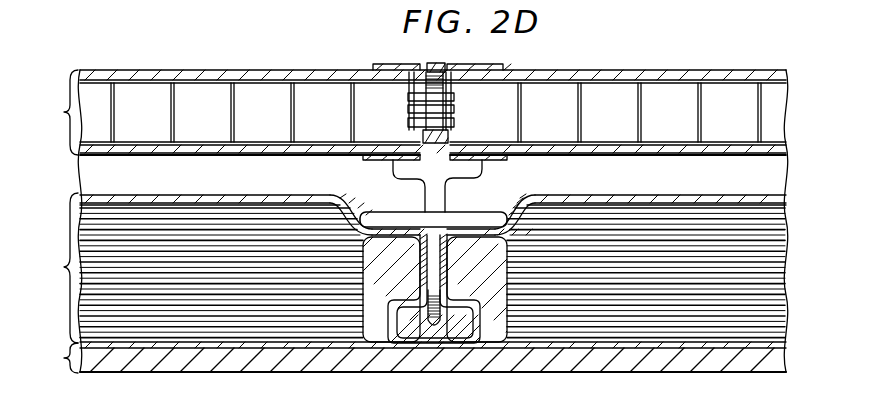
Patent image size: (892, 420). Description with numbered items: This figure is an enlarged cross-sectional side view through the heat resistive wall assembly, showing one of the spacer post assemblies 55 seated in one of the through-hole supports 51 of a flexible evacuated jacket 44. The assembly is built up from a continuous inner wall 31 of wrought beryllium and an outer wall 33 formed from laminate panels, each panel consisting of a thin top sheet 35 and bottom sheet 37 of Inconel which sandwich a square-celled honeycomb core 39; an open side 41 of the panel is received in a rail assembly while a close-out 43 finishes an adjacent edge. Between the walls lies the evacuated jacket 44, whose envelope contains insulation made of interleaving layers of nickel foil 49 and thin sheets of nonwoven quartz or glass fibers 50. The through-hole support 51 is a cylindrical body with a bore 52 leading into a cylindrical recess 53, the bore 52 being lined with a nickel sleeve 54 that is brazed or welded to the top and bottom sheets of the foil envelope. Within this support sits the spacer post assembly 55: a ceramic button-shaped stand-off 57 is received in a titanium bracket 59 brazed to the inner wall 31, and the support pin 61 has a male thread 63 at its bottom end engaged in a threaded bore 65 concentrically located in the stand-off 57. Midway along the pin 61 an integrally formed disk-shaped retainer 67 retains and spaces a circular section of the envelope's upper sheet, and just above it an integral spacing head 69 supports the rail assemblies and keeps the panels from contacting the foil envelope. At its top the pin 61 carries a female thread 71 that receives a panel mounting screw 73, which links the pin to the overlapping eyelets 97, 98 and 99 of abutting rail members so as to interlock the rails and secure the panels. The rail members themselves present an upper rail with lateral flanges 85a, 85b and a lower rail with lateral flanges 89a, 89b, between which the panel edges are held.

The inner wall 31 is at (410, 357).
The outer wall 33 is at (56, 112).
The top sheet 35 is at (632, 69).
The bottom sheet 37 is at (640, 155).
The core 39 is at (676, 124).
The open side 41 is at (452, 136).
The close-out 43 is at (412, 87).
The flexible evacuated jacket 44 is at (410, 268).
The nickel foil 49 is at (622, 250).
The sheets of nonwoven quartz or glass fibers 50 is at (722, 245).
The through-hole support 51 is at (369, 253).
The bore 52 is at (372, 320).
The cylindrical recess 53 is at (452, 262).
The nickel sleeve 54 is at (443, 267).
The spacer post assembly 55 is at (386, 185).
The button-shaped stand-off 57 is at (418, 333).
The titanium bracket 59 is at (430, 355).
The support pin 61 is at (433, 223).
The male thread 63 is at (422, 313).
The threaded bore 65 is at (452, 330).
The disk-shaped retainer 67 is at (406, 224).
The spacing head 69 is at (466, 168).
The female thread 71 is at (455, 84).
The panel mounting screw 73 is at (444, 66).
The lateral flange 85a is at (400, 64).
The lateral flange 85b is at (503, 66).
The lateral flange 89a is at (358, 142).
The lateral flange 89b is at (495, 160).
The eyelet 97 is at (453, 120).
The eyelet 98 is at (446, 106).
The eyelet 99 is at (412, 96).